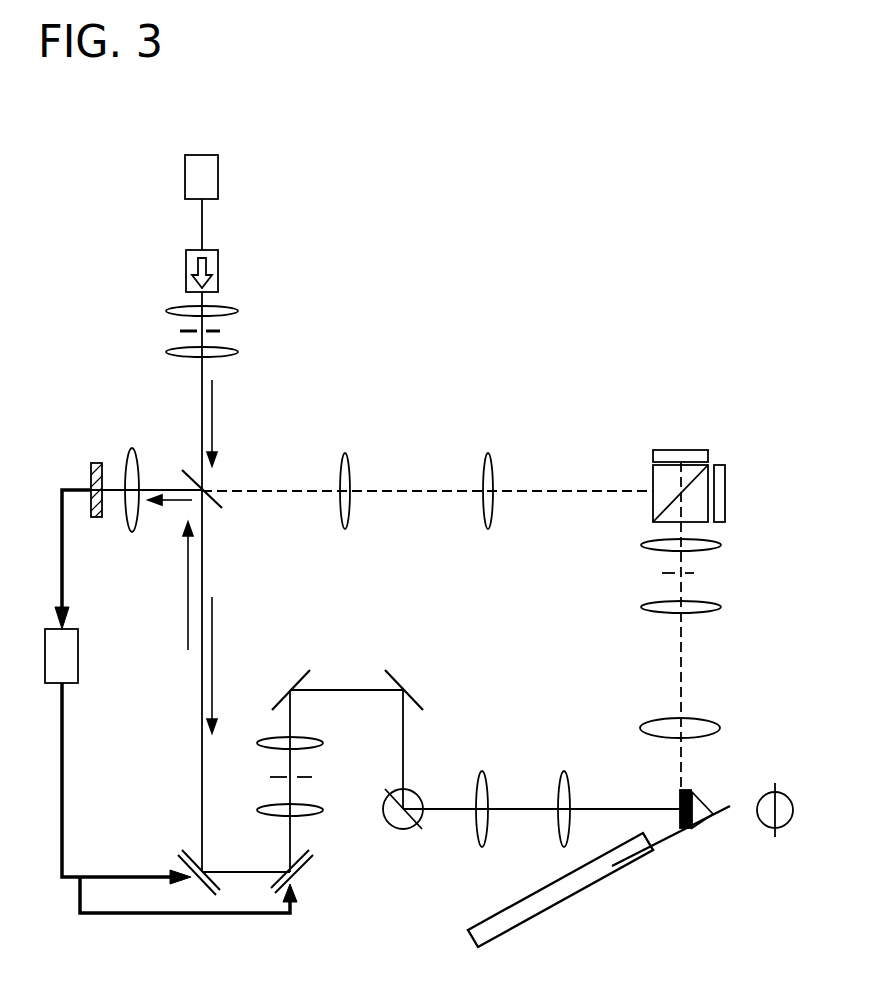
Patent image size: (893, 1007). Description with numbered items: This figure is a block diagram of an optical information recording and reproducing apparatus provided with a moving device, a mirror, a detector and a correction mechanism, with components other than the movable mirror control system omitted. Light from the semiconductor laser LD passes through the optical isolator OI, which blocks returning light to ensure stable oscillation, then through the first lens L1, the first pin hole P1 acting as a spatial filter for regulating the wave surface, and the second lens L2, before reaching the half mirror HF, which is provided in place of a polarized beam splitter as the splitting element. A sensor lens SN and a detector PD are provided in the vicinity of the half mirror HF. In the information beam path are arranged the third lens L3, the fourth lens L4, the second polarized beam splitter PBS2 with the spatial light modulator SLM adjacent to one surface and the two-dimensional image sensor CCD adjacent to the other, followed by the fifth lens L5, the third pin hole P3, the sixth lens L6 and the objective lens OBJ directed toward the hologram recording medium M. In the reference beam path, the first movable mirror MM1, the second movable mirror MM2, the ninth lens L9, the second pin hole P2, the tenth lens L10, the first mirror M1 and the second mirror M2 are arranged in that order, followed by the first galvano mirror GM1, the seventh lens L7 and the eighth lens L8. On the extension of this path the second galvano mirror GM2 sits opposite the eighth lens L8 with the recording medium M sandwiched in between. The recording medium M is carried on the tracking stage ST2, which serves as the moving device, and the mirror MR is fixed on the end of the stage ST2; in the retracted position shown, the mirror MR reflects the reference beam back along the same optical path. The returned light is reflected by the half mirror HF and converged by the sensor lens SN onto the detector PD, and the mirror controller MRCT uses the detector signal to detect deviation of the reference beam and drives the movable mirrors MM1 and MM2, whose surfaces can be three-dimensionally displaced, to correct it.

The semiconductor laser LD is at (198, 154).
The optical isolator OI is at (218, 261).
The first lens L1 is at (236, 309).
The first pin hole P1 is at (180, 331).
The second lens L2 is at (236, 350).
The detector PD is at (92, 462).
The sensor lens SN is at (131, 447).
The half mirror HF is at (222, 508).
The third lens L3 is at (347, 455).
The fourth lens L4 is at (490, 455).
The spatial light modulator SLM is at (663, 449).
The second polarized beam splitter PBS2 is at (652, 507).
The two-dimensional image sensor CCD is at (726, 494).
The fifth lens L5 is at (721, 543).
The third pin hole P3 is at (696, 573).
The sixth lens L6 is at (721, 606).
The objective lens OBJ is at (720, 727).
The second galvano mirror GM2 is at (784, 791).
The mirror MR is at (679, 800).
The tracking stage ST2 is at (671, 843).
The hologram recording medium M is at (527, 905).
The seventh lens L7 is at (483, 771).
The eighth lens L8 is at (565, 771).
The first galvano mirror GM1 is at (432, 778).
The first mirror M1 is at (280, 688).
The second mirror M2 is at (403, 683).
The tenth lens L10 is at (316, 738).
The second pin hole P2 is at (312, 777).
The ninth lens L9 is at (316, 806).
The first movable mirror MM1 is at (178, 862).
The second movable mirror MM2 is at (310, 878).
The mirror controller MRCT is at (78, 660).